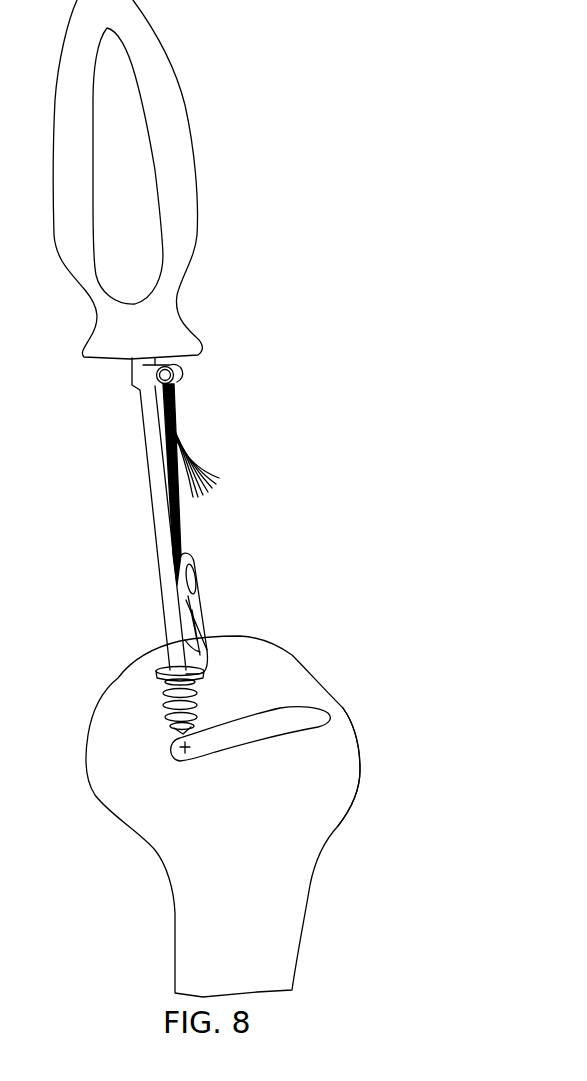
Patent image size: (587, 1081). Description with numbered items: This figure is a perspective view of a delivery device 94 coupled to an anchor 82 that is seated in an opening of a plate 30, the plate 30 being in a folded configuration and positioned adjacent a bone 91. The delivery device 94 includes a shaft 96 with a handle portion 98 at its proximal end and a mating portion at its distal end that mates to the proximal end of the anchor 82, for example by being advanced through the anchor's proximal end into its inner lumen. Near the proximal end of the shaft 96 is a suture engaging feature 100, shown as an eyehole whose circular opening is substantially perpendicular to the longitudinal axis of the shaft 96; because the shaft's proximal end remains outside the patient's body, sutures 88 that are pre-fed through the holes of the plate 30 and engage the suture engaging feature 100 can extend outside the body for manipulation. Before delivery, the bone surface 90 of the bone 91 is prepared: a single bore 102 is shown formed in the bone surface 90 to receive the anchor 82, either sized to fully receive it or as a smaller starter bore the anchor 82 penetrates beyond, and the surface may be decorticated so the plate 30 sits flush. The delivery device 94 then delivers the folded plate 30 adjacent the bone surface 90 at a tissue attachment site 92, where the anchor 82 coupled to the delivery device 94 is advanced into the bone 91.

The plate 30 is at (204, 612).
The anchor 82 is at (155, 712).
The sutures 88 is at (210, 461).
The bone surface 90 is at (256, 680).
The bone 91 is at (347, 755).
The tissue attachment site 92 is at (310, 718).
The delivery device 94 is at (255, 178).
The shaft 96 is at (153, 533).
The handle portion 98 is at (52, 170).
The suture engaging feature 100 is at (177, 367).
The bore 102 is at (168, 755).